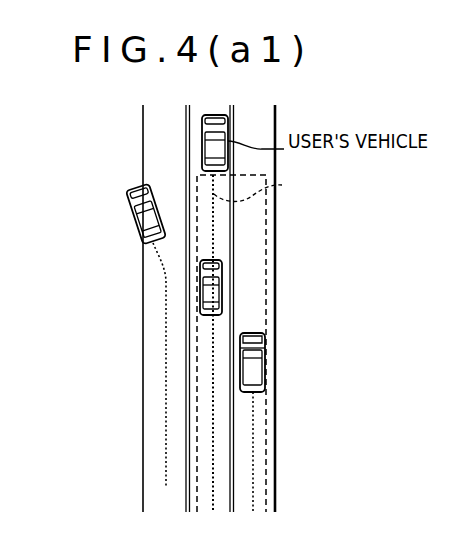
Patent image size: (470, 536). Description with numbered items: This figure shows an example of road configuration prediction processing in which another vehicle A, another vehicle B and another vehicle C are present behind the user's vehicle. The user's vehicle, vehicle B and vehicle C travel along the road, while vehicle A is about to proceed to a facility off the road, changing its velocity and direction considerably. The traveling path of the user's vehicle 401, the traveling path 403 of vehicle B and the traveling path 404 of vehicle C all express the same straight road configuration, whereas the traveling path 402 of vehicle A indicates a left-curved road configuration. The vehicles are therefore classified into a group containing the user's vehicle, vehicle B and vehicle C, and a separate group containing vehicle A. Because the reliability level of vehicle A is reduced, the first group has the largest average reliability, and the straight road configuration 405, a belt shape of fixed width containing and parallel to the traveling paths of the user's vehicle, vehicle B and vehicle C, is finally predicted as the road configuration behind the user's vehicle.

The traveling path of user's vehicle 401 is at (282, 185).
The traveling path of vehicle A 402 is at (166, 412).
The traveling path of vehicle B 403 is at (213, 455).
The traveling path of vehicle C 404 is at (253, 428).
The straight road configuration 405 is at (266, 228).
The vehicle A is at (128, 207).
The vehicle B is at (222, 292).
The vehicle C is at (265, 372).